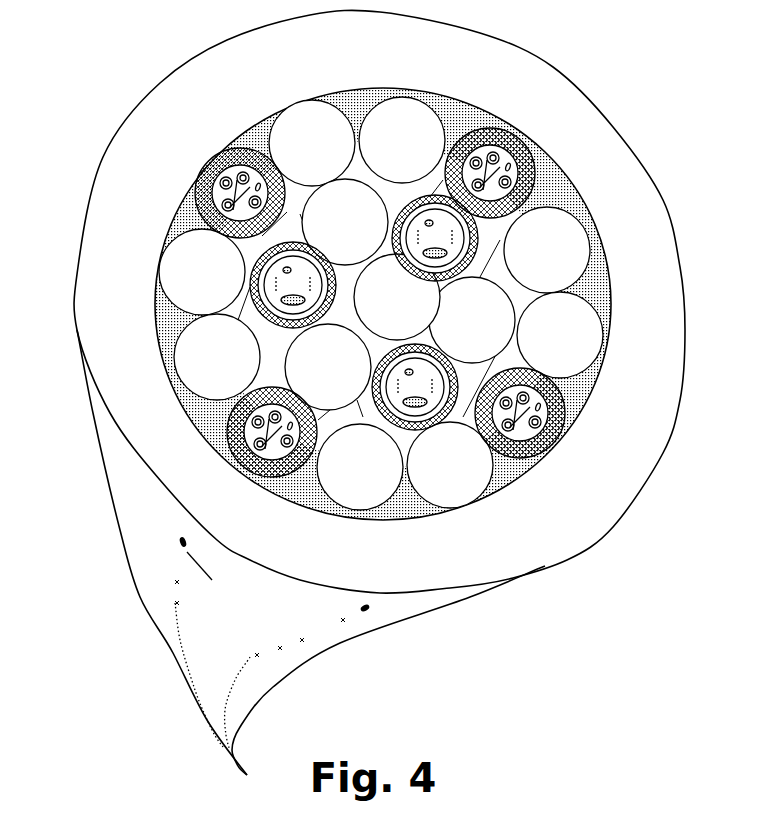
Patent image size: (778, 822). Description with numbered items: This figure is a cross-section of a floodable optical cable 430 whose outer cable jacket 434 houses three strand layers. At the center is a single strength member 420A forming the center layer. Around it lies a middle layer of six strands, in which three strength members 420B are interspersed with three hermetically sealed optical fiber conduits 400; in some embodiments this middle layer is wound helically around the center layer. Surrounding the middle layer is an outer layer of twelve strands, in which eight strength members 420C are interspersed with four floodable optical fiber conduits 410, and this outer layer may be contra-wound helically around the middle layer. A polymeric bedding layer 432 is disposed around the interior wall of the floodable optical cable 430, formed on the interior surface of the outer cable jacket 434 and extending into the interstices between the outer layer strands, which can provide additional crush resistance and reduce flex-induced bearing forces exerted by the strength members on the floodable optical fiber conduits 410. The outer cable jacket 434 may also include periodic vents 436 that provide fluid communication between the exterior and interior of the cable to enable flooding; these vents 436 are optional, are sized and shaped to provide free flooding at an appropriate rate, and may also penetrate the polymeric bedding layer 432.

The floodable optical cable 430 is at (95, 61).
The outer cable jacket 434 is at (552, 72).
The polymeric bedding layer 432 is at (558, 190).
The floodable optical fiber conduit 410 is at (553, 436).
The hermetically sealed optical fiber conduit 400 is at (434, 399).
The strength member 420A is at (372, 309).
The strength member 420B is at (497, 332).
The strength member 420C is at (475, 477).
The vent 436 is at (323, 632).